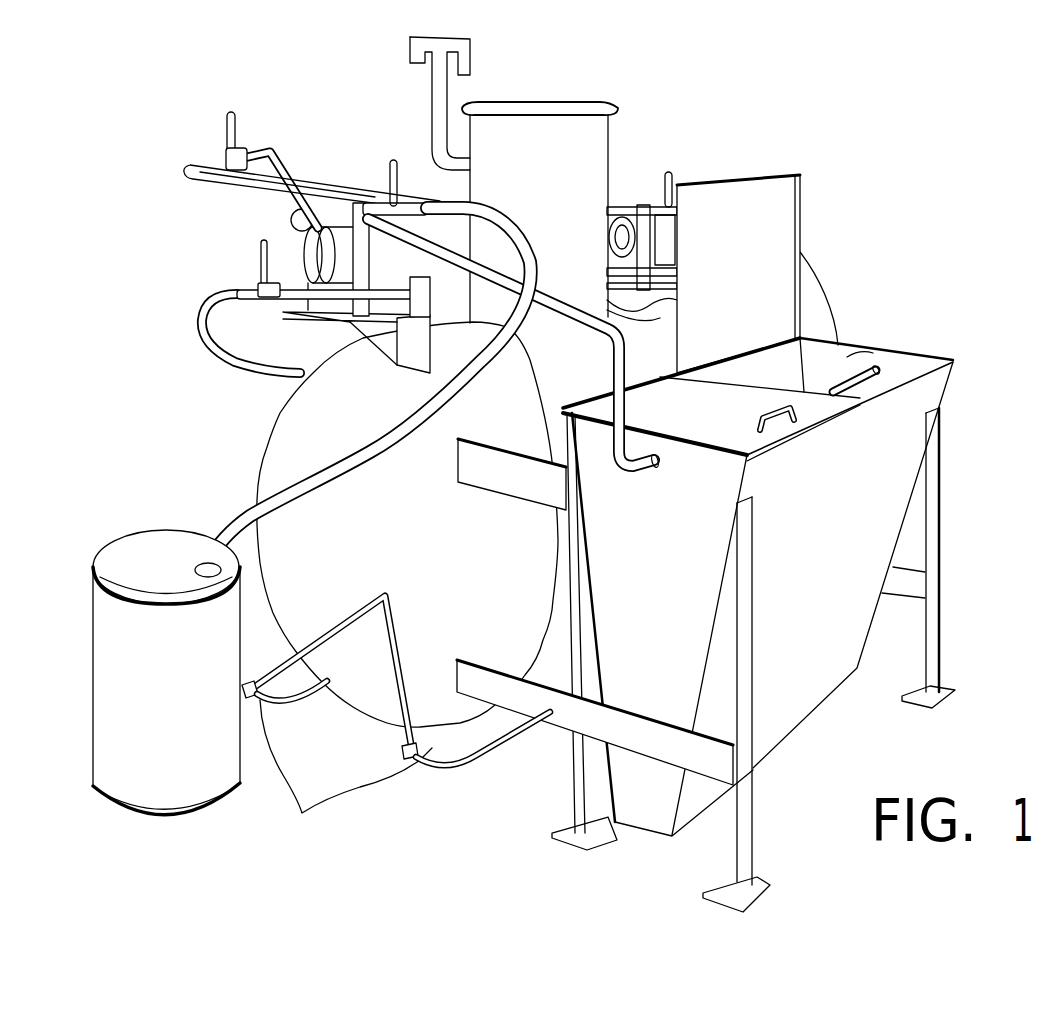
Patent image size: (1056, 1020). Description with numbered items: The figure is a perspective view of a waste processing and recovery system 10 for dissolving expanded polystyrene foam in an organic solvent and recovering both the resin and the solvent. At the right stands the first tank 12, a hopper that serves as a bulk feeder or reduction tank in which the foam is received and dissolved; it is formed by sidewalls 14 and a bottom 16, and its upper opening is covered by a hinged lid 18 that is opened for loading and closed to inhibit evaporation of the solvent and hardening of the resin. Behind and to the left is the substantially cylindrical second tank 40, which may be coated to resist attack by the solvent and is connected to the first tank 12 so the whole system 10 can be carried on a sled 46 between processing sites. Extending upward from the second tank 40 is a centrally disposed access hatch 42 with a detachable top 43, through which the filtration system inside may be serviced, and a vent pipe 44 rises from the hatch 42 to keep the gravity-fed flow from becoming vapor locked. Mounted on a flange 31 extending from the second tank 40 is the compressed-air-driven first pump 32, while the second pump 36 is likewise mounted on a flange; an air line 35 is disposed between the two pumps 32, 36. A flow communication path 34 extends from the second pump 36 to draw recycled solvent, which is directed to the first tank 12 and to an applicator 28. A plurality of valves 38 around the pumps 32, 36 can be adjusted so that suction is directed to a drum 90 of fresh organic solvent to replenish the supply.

The waste processing and recovery system 10 is at (897, 155).
The first tank 12 is at (967, 385).
The sidewall 14 is at (662, 571).
The bottom 16 is at (654, 832).
The hinged cover or lid 18 is at (750, 250).
The applicator 28 is at (855, 380).
The flange 31 is at (407, 350).
The first pump 32 is at (627, 233).
The flow communication path 34 is at (388, 293).
The air line 35 is at (317, 183).
The second pump 36 is at (340, 228).
The valves 38 is at (227, 131).
The second tank 40 is at (268, 421).
The access hatch 42 is at (550, 165).
The top 43 is at (603, 104).
The vent pipe 44 is at (470, 67).
The sled 46 is at (302, 816).
The drum 90 is at (123, 545).